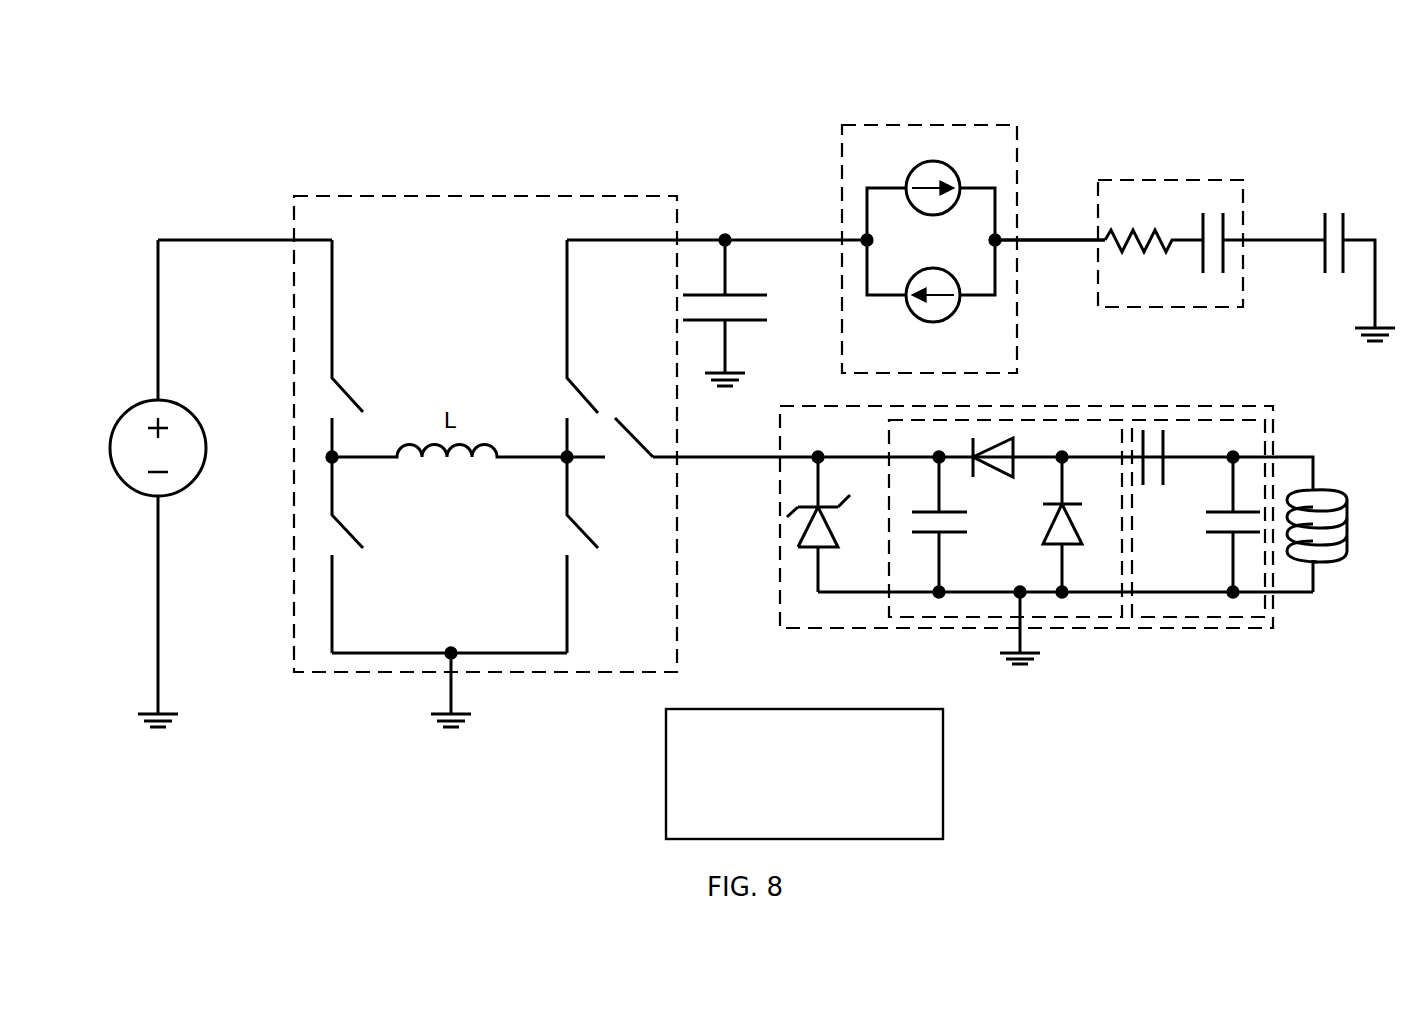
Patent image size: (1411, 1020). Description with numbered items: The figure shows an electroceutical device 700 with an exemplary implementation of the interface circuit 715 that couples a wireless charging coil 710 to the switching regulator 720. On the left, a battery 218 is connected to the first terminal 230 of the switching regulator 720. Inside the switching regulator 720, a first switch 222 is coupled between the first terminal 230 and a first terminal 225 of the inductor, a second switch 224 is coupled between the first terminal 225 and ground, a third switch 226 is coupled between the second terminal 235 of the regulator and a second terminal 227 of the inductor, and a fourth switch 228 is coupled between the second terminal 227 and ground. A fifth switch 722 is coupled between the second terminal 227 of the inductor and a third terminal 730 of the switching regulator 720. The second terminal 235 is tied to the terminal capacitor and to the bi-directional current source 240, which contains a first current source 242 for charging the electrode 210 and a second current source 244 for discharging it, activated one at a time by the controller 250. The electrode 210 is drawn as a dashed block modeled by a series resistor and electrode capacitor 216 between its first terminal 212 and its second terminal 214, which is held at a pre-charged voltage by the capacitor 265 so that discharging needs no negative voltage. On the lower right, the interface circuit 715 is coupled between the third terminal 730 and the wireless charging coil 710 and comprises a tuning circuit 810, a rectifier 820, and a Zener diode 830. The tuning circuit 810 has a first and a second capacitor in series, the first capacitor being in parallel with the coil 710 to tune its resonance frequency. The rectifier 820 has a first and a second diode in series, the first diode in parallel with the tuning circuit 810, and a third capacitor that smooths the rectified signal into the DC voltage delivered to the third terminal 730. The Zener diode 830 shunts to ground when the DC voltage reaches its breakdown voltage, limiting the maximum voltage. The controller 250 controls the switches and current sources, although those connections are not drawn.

The electroceutical device 700 is at (1324, 109).
The battery 218 is at (183, 402).
The first terminal 230 is at (296, 229).
The switching regulator 720 is at (482, 196).
The first switch 222 is at (341, 370).
The second switch 224 is at (353, 520).
The third switch 226 is at (574, 370).
The fourth switch 228 is at (581, 507).
The fifth switch 722 is at (628, 422).
The first terminal of the inductor 225 is at (338, 462).
The second terminal of the inductor 227 is at (562, 462).
The second terminal 235 is at (680, 238).
The bi-directional current source 240 is at (973, 229).
The first current source 242 is at (918, 166).
The second current source 244 is at (925, 322).
The first terminal of the electrode 212 is at (1098, 238).
The electrode 210 is at (1170, 271).
The capacitor C 216 is at (1176, 245).
The second terminal of the electrode 214 is at (1245, 242).
The capacitor 265 is at (1320, 224).
The third terminal 730 is at (690, 460).
The interface circuit 715 is at (1015, 525).
The Zener diode 830 is at (800, 537).
The rectifier 820 is at (1058, 620).
The tuning circuit 810 is at (1185, 620).
The wireless charging coil 710 is at (1320, 480).
The controller 250 is at (900, 709).